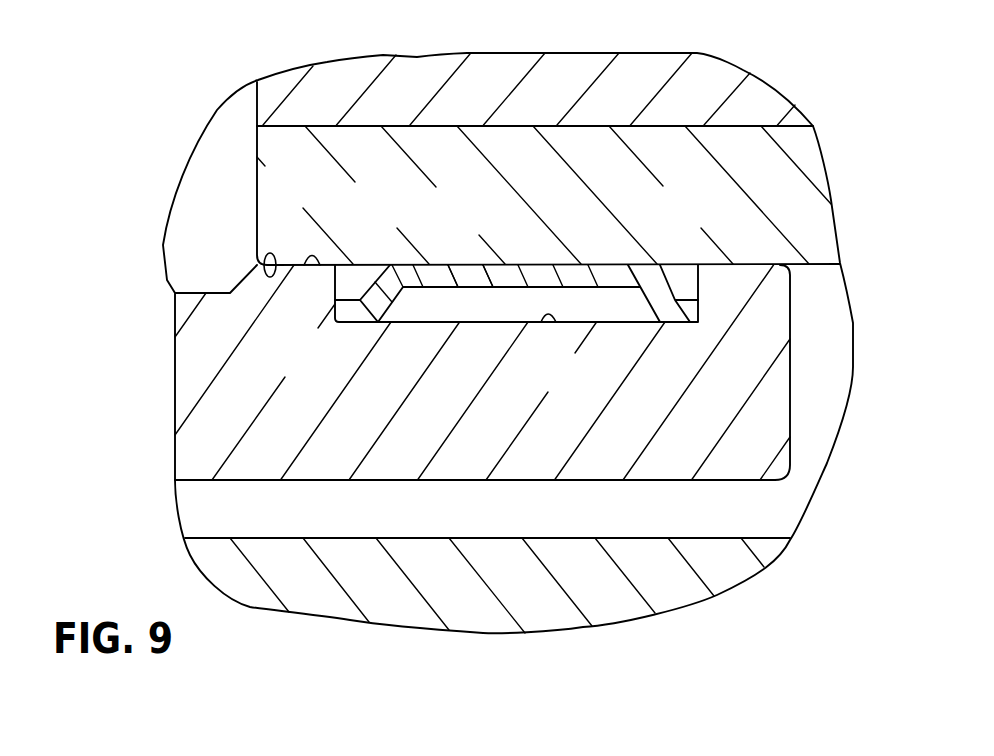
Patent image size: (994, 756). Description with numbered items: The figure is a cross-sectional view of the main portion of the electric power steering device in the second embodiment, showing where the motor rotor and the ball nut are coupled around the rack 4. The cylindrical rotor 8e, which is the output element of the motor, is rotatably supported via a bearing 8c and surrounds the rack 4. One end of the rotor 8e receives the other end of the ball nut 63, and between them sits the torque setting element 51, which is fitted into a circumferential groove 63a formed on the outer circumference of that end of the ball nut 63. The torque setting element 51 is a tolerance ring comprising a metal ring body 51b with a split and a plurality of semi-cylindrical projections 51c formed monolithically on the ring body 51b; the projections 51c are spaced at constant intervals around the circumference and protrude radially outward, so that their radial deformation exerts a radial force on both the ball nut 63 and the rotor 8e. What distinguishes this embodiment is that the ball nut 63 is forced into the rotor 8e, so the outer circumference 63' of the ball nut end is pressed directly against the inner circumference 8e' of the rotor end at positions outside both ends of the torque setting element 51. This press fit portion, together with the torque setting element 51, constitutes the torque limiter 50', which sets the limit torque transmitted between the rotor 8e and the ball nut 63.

The rack 4 is at (543, 615).
The bearing 8c is at (503, 75).
The rotor 8e is at (535, 73).
The inner circumference of the one end of the rotor 8e' is at (581, 255).
The torque limiter 50' is at (548, 195).
The torque setting element 51 is at (541, 278).
The ring body 51b is at (357, 265).
The semi-cylindrical projections 51c is at (472, 270).
The ball nut 63 is at (482, 475).
The outer circumference of the other end of the ball nut 63' is at (582, 290).
The circumferential groove 63a is at (553, 322).